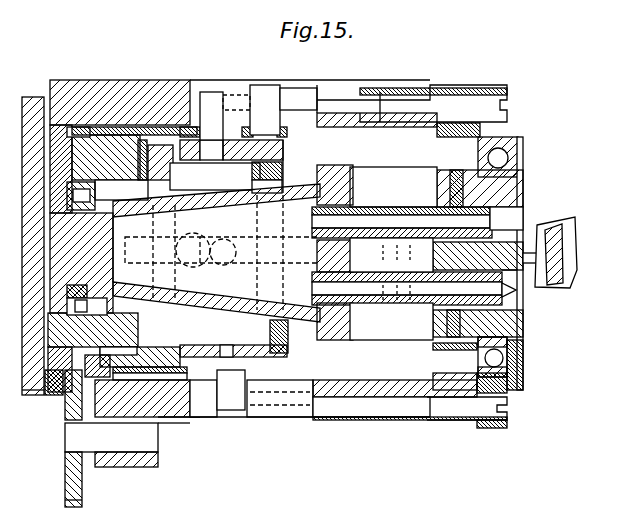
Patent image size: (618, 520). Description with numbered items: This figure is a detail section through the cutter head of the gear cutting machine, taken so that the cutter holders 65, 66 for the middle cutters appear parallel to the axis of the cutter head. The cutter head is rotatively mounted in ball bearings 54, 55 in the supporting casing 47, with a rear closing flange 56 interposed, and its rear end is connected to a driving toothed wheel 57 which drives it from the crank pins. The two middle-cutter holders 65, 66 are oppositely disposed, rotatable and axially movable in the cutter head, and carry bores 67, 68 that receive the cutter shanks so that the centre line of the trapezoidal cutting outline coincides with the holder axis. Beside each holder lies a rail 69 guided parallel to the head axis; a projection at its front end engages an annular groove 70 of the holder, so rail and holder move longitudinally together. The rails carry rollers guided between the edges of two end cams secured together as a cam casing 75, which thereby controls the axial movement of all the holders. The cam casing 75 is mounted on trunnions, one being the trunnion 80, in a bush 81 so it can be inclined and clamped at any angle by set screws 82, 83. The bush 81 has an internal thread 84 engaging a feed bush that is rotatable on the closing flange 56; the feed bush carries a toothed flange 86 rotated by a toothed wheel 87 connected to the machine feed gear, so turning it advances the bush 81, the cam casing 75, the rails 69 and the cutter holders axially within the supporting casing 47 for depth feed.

The supporting casing 47 is at (132, 443).
The ball bearing 54 is at (498, 157).
The ball bearing 55 is at (87, 248).
The rear closing flange 56 is at (119, 236).
The driving toothed wheel 57 is at (33, 246).
The cutter holder 65 is at (478, 238).
The cutter holder 66 is at (509, 283).
The bore 67 is at (402, 201).
The bore 68 is at (407, 290).
The rail 69 is at (216, 253).
The annular groove 70 is at (397, 306).
The cam casing 75 is at (215, 160).
The trunnion 80 is at (208, 265).
The bush 81 is at (295, 371).
The set screw 82 is at (478, 352).
The set screw 83 is at (289, 289).
The internal thread 84 is at (97, 366).
The toothed flange 86 is at (106, 350).
The toothed wheel 87 is at (73, 395).